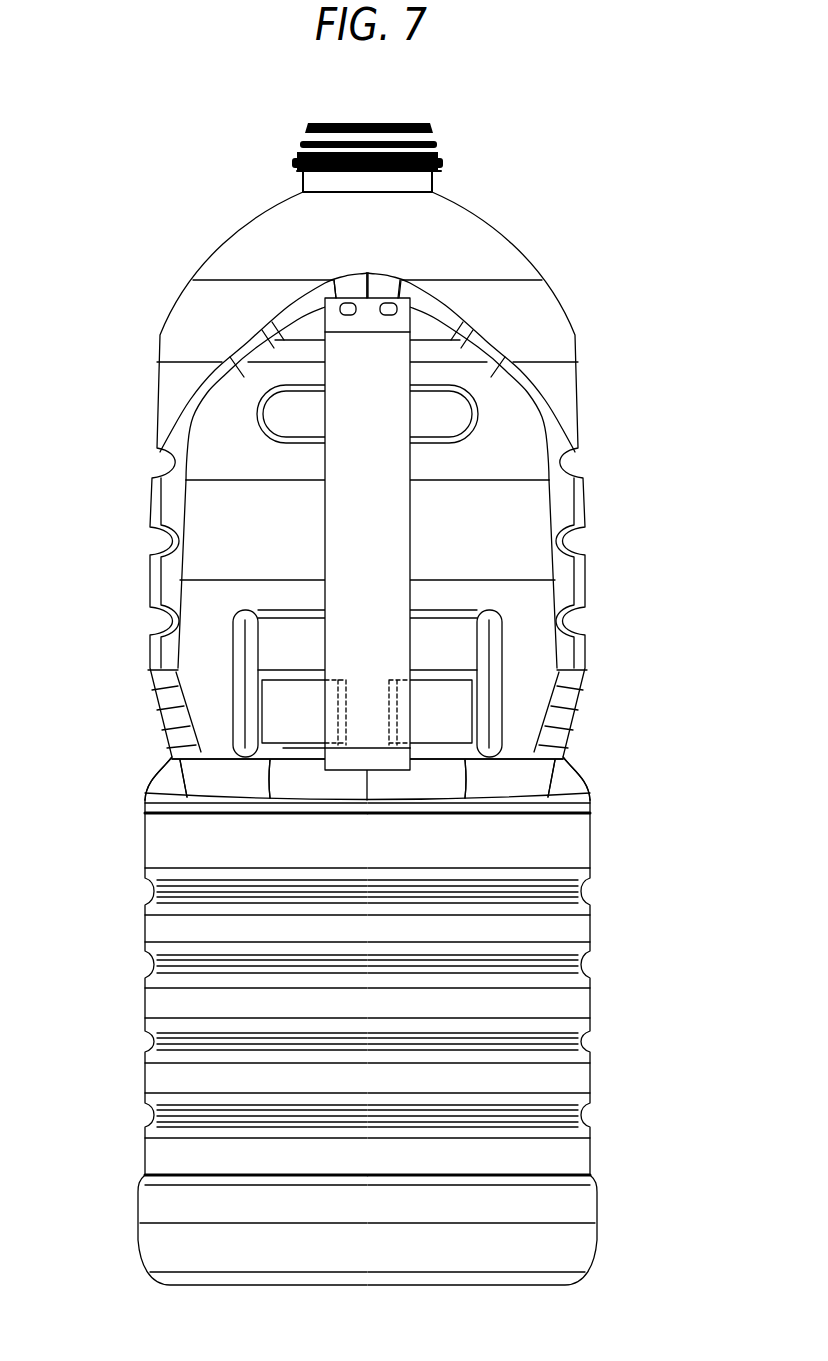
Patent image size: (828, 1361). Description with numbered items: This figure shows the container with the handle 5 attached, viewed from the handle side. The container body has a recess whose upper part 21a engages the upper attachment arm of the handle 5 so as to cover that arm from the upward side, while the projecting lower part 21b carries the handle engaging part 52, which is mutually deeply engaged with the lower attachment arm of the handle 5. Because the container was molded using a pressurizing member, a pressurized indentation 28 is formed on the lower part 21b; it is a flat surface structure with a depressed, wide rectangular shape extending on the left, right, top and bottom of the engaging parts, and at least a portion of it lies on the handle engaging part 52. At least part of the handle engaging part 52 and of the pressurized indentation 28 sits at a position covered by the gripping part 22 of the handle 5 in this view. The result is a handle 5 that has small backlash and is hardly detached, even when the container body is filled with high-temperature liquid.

The handle 5 is at (343, 432).
The upper part of the recess 21a is at (305, 398).
The lower part of the recess 21b is at (252, 705).
The gripping part 22 is at (352, 514).
The pressurized indentation 28 is at (280, 724).
The handle engaging part 52 is at (340, 677).